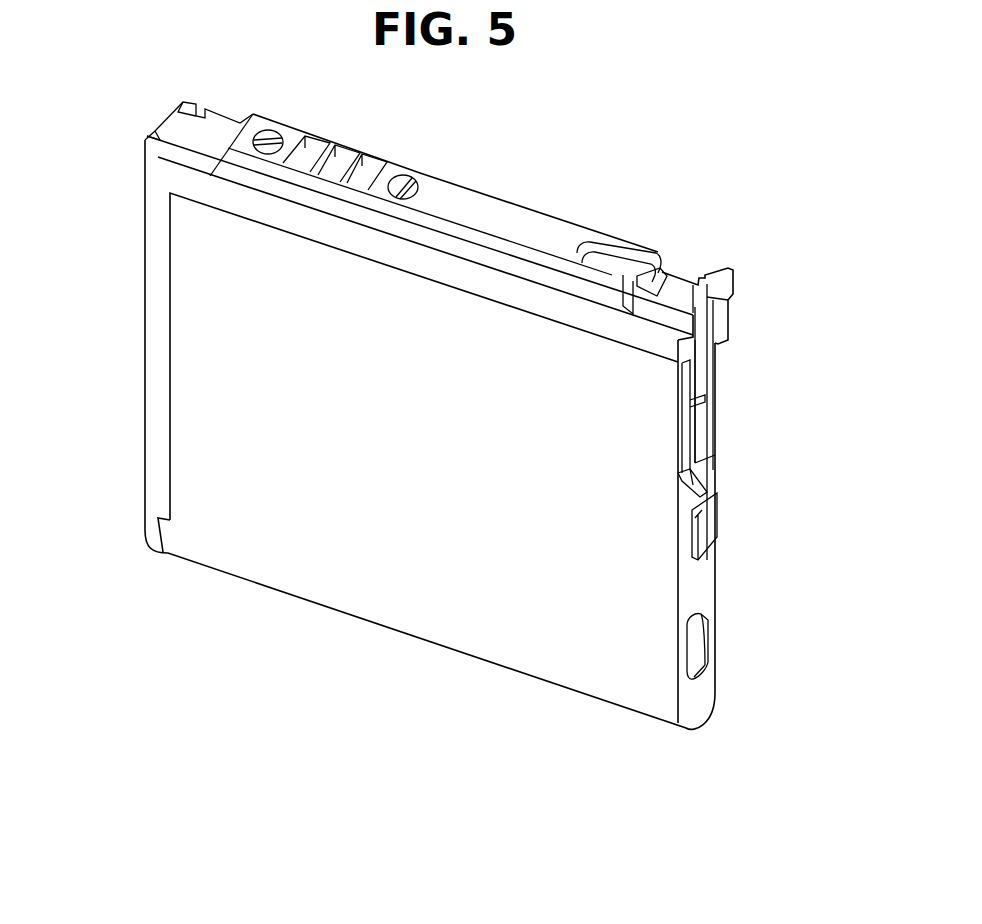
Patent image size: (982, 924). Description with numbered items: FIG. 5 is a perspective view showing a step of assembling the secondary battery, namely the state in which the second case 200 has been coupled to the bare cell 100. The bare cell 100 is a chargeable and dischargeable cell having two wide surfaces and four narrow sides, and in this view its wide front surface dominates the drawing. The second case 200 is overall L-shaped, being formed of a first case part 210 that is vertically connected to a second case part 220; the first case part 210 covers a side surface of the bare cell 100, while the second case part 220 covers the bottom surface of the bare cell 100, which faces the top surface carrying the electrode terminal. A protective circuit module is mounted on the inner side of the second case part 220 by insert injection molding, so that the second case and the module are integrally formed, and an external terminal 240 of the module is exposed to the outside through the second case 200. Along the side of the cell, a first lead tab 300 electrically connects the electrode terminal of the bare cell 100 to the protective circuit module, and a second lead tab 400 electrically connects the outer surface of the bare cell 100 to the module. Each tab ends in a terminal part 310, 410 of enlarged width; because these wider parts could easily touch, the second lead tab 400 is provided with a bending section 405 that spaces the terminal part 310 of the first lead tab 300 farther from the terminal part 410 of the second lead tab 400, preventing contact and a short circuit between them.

The bare cell 100 is at (403, 613).
The second case 200 is at (584, 211).
The first case part 210 is at (445, 273).
The second case part 220 is at (150, 321).
The external terminal 240 is at (313, 153).
The first lead tab 300 is at (708, 364).
The terminal part 310 is at (707, 427).
The second lead tab 400 is at (684, 405).
The bending section 405 is at (688, 483).
The terminal part 410 is at (710, 530).